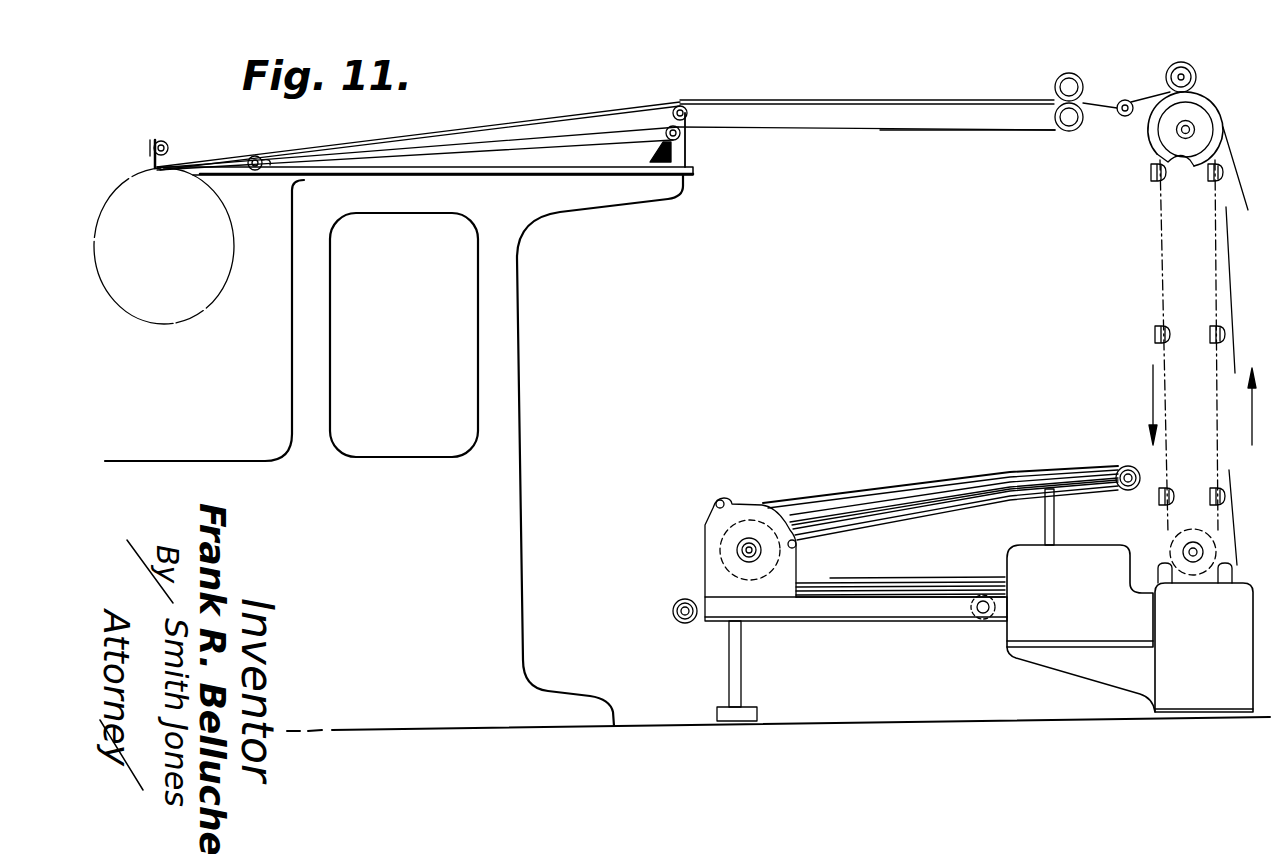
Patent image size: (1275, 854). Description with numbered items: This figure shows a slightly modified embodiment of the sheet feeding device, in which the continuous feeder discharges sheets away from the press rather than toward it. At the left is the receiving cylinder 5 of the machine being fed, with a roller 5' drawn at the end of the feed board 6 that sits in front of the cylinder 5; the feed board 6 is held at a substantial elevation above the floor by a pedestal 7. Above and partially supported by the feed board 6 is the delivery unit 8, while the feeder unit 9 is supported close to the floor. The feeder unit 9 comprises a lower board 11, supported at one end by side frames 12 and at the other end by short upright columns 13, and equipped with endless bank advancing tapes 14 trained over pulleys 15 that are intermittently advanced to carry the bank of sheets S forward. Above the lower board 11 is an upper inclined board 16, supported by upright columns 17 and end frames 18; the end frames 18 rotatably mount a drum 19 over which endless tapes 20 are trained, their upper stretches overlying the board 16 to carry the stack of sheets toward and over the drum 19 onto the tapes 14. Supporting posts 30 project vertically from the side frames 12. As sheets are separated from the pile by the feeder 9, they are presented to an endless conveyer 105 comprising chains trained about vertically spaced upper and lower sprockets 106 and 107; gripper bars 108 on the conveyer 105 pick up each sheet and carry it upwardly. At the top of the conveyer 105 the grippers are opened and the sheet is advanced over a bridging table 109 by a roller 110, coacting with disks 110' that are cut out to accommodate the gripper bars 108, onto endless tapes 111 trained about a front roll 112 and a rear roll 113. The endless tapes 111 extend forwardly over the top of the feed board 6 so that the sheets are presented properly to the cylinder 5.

The receiving cylinder 5 is at (164, 262).
The guide roller 5' is at (136, 149).
The feed board 6 is at (450, 165).
The pedestal 7 is at (522, 277).
The delivery unit 8 is at (486, 120).
The feeder unit 9 is at (945, 461).
The lower board 11 is at (875, 595).
The side frames 12 is at (1072, 668).
The upright columns 13 is at (752, 658).
The bank advancing tapes 14 is at (876, 622).
The pulleys 15 is at (680, 625).
The upper inclined board 16 is at (1066, 468).
The upright columns 17 is at (1056, 532).
The end frames 18 is at (707, 560).
The drum 19 is at (723, 527).
The endless tapes 20 is at (976, 508).
The supporting posts 30 is at (1235, 568).
The bank of sheets S is at (932, 591).
The endless conveyer 105 is at (1156, 262).
The upper sprockets 106 is at (1150, 132).
The lower sprockets 107 is at (1198, 528).
The gripper bars 108 is at (1150, 173).
The bridging table 109 is at (1099, 101).
The roller 110 is at (1174, 69).
The disks 110' is at (1172, 151).
The endless tapes 111 is at (993, 133).
The front roll 112 is at (266, 170).
The rear roll 113 is at (1080, 133).